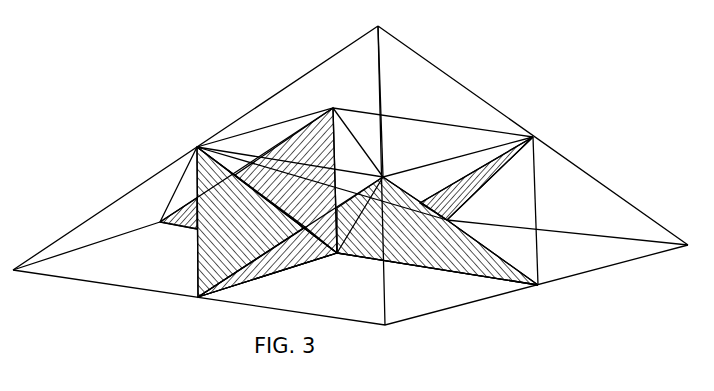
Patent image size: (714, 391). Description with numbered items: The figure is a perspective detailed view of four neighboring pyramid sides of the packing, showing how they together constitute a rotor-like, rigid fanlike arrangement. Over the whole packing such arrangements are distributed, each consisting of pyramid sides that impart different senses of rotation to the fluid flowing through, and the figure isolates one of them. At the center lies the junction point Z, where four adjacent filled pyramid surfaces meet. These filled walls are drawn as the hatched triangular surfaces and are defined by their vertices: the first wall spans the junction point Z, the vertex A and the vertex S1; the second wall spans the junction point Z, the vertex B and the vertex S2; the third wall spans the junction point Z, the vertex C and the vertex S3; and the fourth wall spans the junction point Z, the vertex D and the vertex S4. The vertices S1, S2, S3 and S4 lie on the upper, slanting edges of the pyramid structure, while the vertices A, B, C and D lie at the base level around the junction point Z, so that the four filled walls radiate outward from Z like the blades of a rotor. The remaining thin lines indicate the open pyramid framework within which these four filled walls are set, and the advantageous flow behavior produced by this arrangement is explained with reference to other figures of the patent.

The pyramid wall vertex S1 is at (197, 147).
The pyramid wall vertex S2 is at (333, 108).
The pyramid wall vertex S3 is at (533, 137).
The pyramid wall vertex S4 is at (383, 177).
The pyramid wall vertex A is at (198, 297).
The pyramid wall vertex B is at (160, 222).
The pyramid wall vertex C is at (447, 220).
The pyramid wall vertex D is at (538, 285).
The junction point Z is at (337, 253).